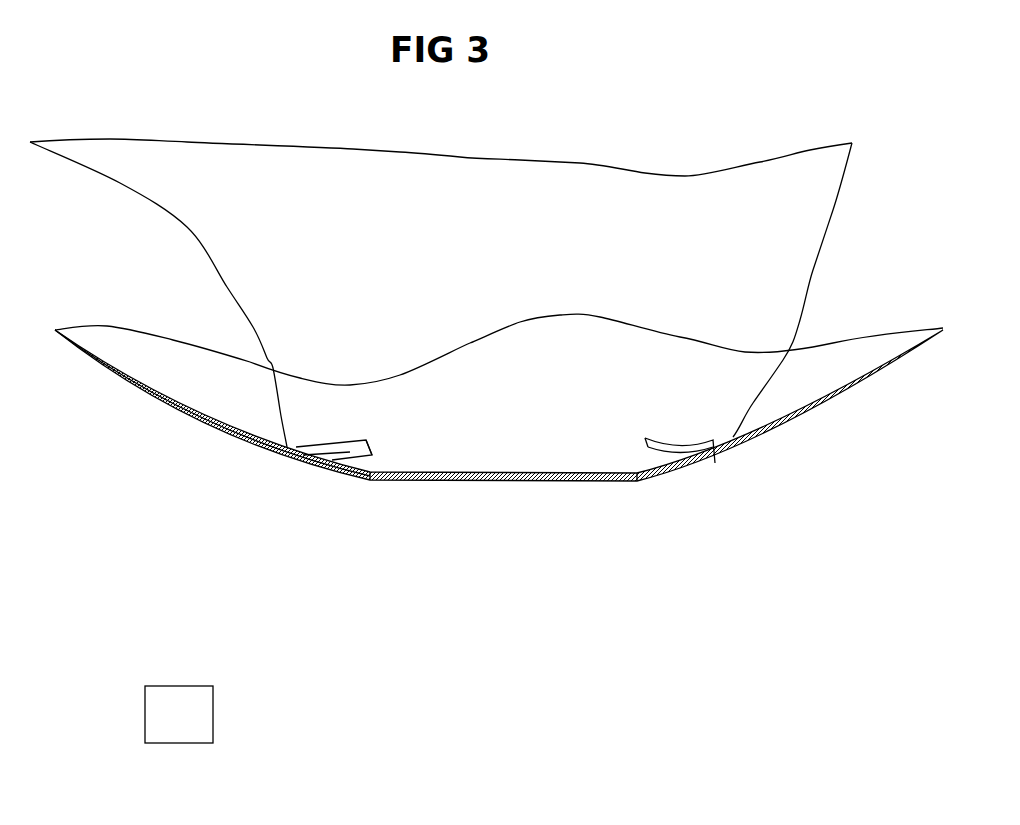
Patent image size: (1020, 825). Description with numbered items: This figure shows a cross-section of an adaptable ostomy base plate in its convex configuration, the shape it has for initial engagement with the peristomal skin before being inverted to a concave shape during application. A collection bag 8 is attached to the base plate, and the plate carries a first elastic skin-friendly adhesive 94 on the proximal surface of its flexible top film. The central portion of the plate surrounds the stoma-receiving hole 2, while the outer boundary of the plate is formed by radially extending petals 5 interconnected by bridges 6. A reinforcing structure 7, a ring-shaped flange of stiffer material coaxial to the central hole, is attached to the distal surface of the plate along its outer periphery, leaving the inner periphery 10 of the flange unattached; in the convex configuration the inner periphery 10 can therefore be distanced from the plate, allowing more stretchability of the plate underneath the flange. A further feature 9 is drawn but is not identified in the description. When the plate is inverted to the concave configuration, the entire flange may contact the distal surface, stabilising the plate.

The collection bag 8 is at (305, 143).
The petals 5 is at (120, 343).
The bridges 6 is at (376, 380).
The stoma-receiving hole 2 is at (535, 481).
The clip 9 is at (293, 448).
The inner periphery of the flange 10 is at (377, 447).
The reinforcing structure 7 is at (680, 443).
The first elastic skin-friendly adhesive 94 is at (215, 428).